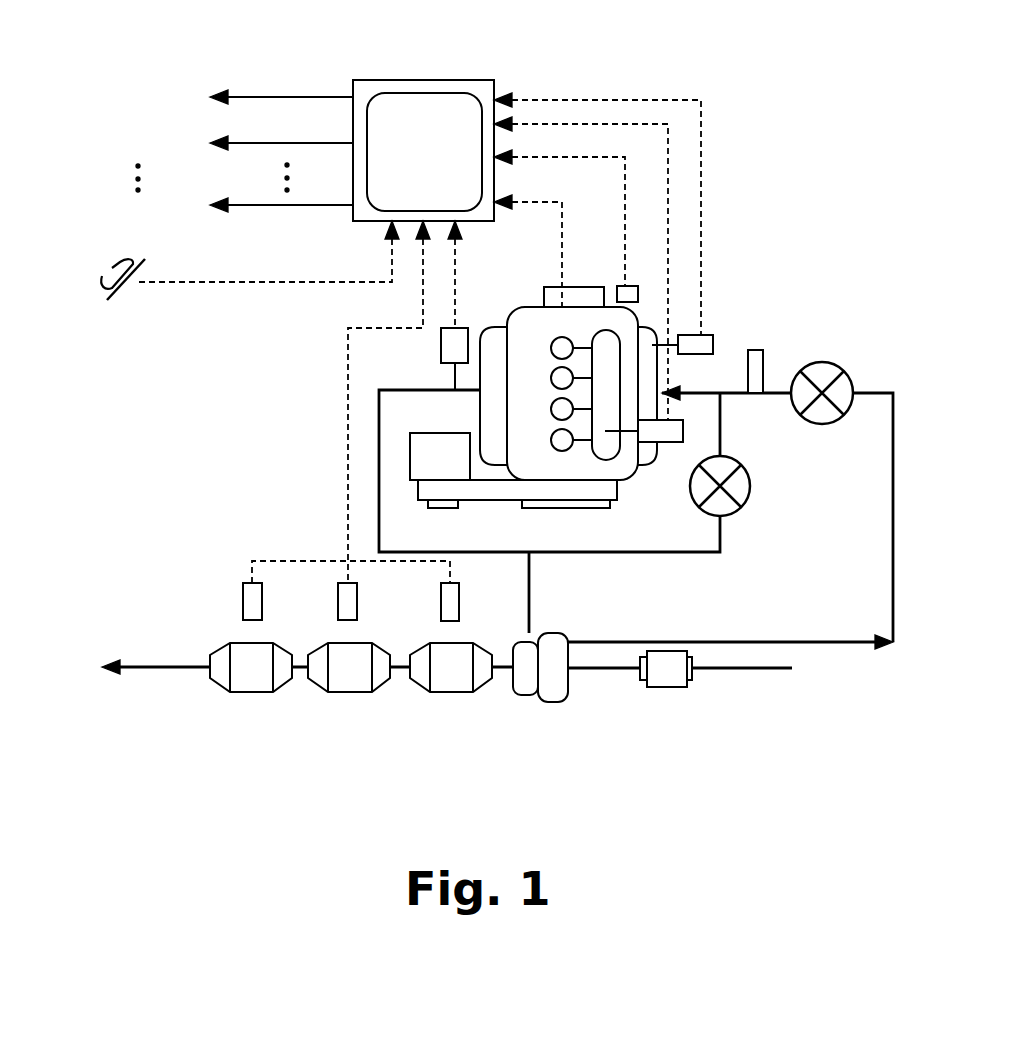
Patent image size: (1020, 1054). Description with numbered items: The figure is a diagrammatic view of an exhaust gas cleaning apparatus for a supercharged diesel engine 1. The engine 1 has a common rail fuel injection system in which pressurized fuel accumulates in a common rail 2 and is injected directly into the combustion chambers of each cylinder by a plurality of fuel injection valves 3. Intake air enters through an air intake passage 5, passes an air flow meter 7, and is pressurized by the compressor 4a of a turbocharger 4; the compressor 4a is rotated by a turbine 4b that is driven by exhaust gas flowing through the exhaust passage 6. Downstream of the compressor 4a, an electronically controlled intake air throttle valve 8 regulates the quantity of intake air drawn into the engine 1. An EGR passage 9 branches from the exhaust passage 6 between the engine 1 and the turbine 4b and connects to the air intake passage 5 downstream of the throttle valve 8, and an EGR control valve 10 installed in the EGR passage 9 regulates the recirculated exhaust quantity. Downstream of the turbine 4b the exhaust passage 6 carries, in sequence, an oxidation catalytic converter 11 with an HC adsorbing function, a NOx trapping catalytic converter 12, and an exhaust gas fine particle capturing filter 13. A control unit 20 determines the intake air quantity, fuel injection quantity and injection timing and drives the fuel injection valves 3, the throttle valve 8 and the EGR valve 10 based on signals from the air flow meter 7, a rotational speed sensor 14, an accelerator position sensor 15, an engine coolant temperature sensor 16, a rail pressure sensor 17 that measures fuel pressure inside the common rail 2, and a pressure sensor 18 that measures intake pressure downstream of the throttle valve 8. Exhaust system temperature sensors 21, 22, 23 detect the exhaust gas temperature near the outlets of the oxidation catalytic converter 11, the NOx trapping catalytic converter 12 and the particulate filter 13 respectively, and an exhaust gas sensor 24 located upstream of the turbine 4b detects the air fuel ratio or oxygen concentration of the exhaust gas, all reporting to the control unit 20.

The supercharged diesel engine 1 is at (632, 470).
The common rail 2 is at (606, 452).
The fuel injection valves 3 is at (550, 440).
The turbocharger 4 is at (541, 724).
The compressor 4a is at (553, 703).
The turbine 4b is at (525, 697).
The air intake passage 5 is at (768, 682).
The exhaust passage 6 is at (530, 593).
The air flow meter 7 is at (668, 690).
The intake air throttle valve 8 is at (822, 424).
The EGR passage 9 is at (678, 553).
The EGR control valve 10 is at (727, 515).
The oxidation catalytic converter 11 is at (453, 692).
The NOx trapping catalytic converter 12 is at (350, 692).
The exhaust gas fine particle capturing filter 13 is at (255, 692).
The rotational speed sensor 14 is at (628, 286).
The accelerator position sensor 15 is at (119, 289).
The engine coolant temperature sensor 16 is at (715, 335).
The rail pressure sensor 17 is at (685, 432).
The pressure sensor 18 is at (764, 356).
The control unit 20 is at (411, 80).
The exhaust system temperature sensor 21 is at (460, 600).
The exhaust system temperature sensor 22 is at (357, 603).
The exhaust system temperature sensor 23 is at (262, 598).
The exhaust gas sensor 24 is at (441, 348).